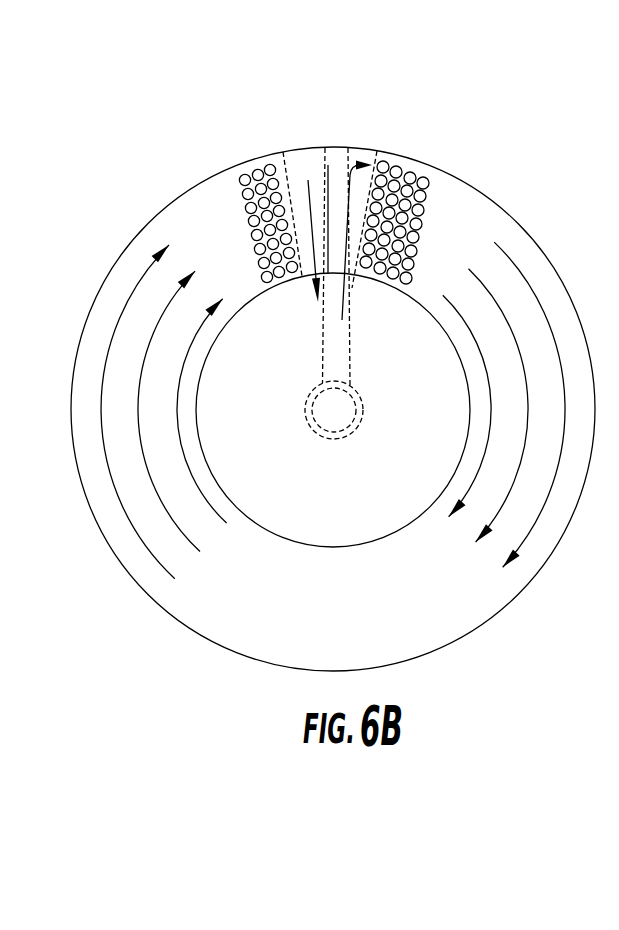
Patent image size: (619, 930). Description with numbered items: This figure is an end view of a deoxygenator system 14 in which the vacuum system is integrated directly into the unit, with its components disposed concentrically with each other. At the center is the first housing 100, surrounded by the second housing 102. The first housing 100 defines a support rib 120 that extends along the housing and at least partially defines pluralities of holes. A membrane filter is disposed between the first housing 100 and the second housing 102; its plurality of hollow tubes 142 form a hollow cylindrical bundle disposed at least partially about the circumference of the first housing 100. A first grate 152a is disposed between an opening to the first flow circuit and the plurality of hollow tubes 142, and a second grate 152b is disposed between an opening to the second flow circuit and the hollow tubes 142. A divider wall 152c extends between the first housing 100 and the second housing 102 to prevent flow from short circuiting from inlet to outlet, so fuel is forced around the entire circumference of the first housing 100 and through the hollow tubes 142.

The deoxygenator system 14 is at (226, 38).
The second housing 102 is at (138, 232).
The first housing 100 is at (248, 305).
The support rib 120 is at (349, 347).
The plurality of hollow tubes 142 is at (434, 189).
The first grate 152a is at (377, 151).
The second grate 152b is at (253, 165).
The divider wall 152c is at (328, 165).